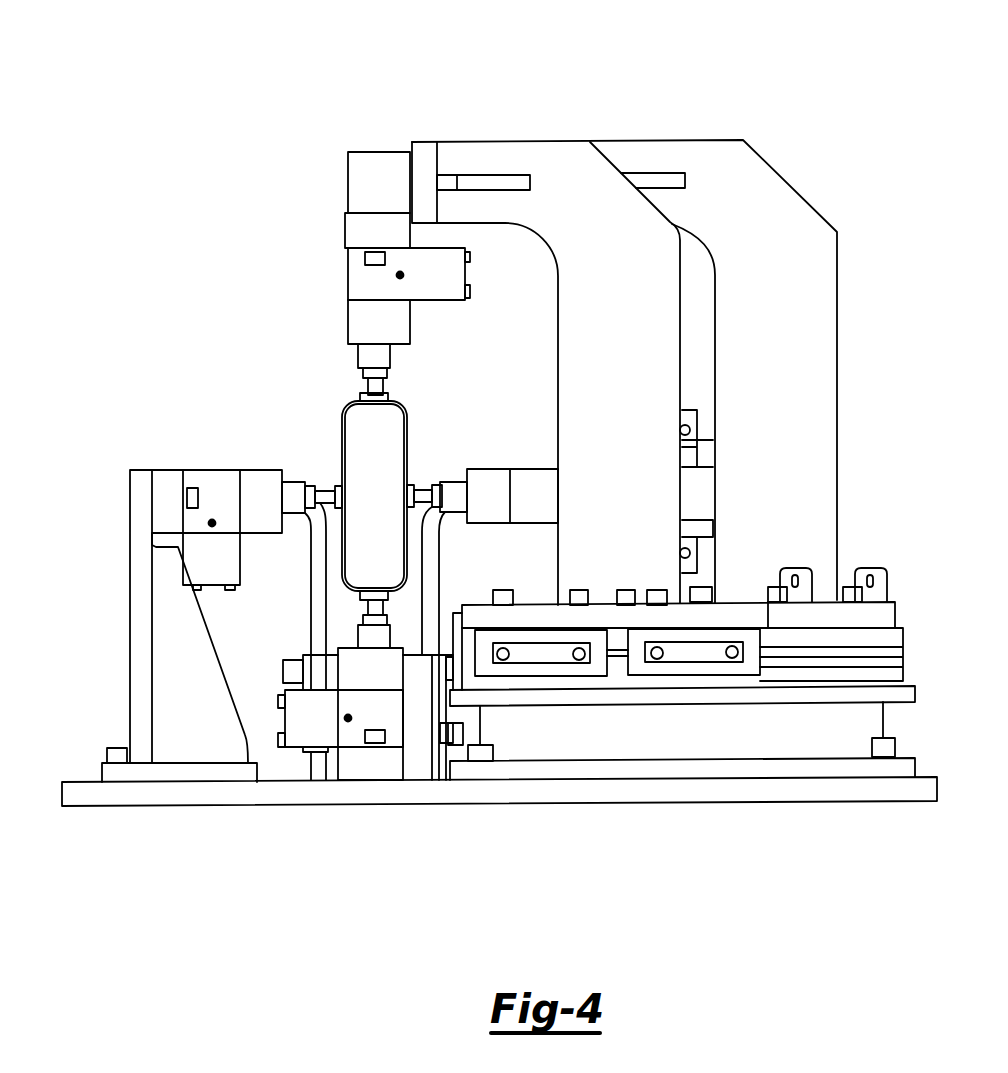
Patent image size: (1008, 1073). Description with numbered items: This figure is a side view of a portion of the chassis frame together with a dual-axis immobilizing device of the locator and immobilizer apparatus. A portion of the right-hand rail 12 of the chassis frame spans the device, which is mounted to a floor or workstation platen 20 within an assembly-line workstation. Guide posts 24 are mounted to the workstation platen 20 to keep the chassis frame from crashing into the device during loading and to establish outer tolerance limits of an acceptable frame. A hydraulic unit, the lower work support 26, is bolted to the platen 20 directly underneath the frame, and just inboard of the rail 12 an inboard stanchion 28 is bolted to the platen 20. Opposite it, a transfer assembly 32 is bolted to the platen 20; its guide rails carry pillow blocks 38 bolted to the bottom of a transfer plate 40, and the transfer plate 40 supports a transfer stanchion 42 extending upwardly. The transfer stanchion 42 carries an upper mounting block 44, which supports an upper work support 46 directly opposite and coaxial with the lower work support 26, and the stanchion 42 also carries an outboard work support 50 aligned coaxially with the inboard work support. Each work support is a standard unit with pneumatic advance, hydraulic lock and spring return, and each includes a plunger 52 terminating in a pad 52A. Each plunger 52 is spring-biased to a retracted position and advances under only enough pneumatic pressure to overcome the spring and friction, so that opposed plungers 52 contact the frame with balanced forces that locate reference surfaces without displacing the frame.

The right-hand rail 12 is at (408, 440).
The workstation platen 20 is at (452, 790).
The guide posts 24 is at (317, 632).
The lower work support 26 is at (370, 765).
The inboard stanchion 28 is at (130, 583).
The transfer assembly 32 is at (624, 331).
The pillow blocks 38 is at (557, 668).
The transfer plate 40 is at (598, 605).
The transfer stanchion 42 is at (609, 329).
The upper mounting block 44 is at (352, 172).
The upper work support 46 is at (350, 238).
The outboard work support 50 is at (530, 468).
The plunger 52 is at (297, 487).
The pad 52A is at (374, 598).